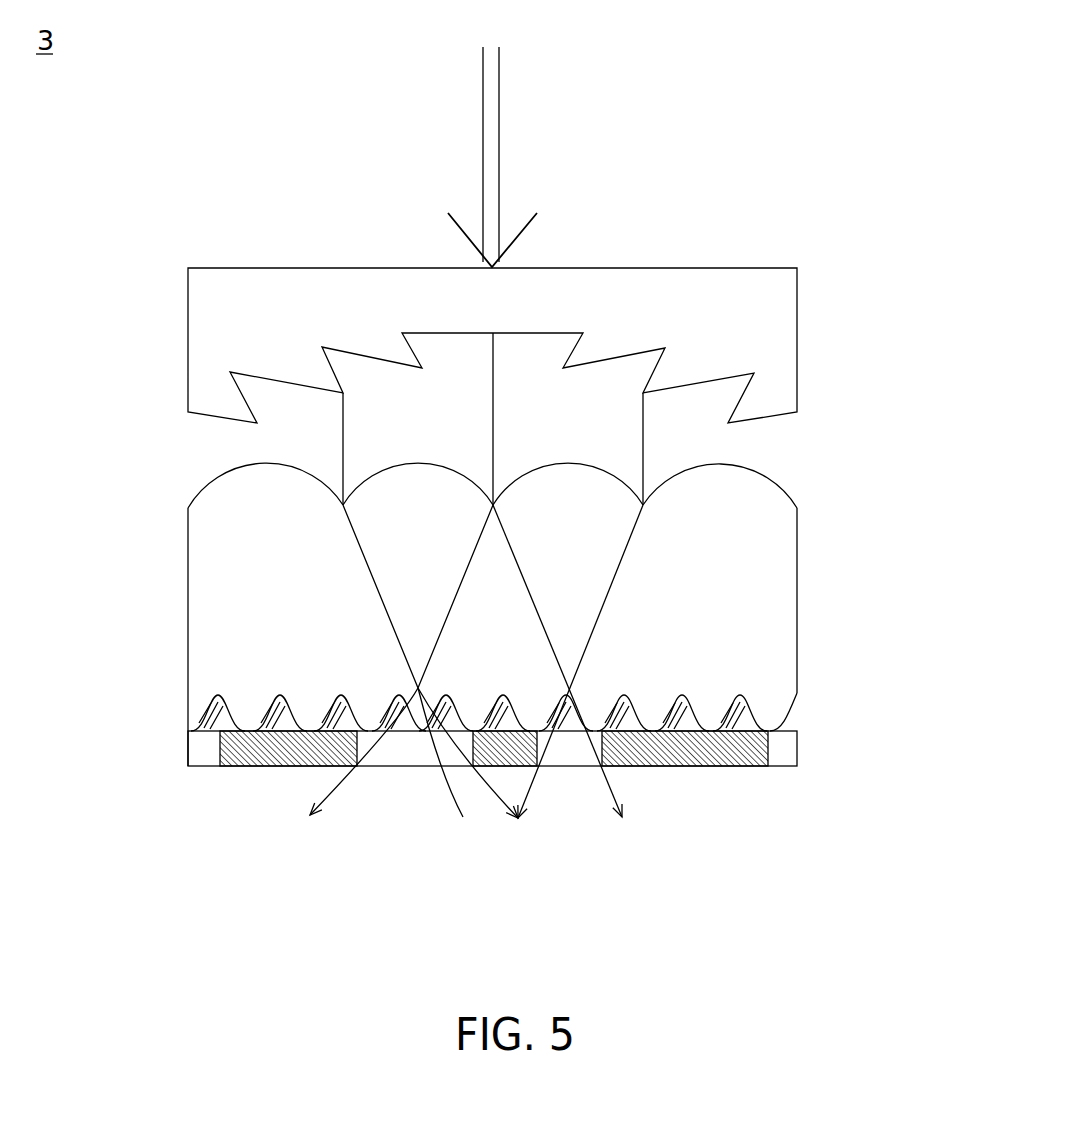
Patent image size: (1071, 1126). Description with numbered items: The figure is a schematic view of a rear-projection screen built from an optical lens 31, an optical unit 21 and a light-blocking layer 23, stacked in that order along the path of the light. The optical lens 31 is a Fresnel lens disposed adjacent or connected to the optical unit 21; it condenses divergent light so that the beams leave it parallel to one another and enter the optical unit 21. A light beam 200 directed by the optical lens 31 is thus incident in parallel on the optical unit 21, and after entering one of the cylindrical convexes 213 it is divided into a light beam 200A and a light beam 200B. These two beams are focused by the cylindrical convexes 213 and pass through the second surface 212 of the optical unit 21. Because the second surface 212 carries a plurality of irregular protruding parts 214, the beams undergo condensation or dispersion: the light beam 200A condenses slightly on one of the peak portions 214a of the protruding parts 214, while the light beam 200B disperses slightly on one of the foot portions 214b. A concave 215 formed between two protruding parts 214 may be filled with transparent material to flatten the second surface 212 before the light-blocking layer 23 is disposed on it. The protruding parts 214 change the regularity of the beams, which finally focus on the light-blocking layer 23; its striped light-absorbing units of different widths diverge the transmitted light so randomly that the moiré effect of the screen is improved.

The light beam 200 is at (493, 100).
The optical lens 31 is at (740, 295).
The light beam 200A is at (630, 447).
The light beam 200B is at (360, 450).
The optical unit 21 is at (782, 580).
The cylindrical convexes 213 is at (262, 463).
The second surface 212 is at (268, 695).
The concave 215 is at (203, 720).
The light-blocking layer 23 is at (798, 747).
The protruding parts 214 is at (569, 690).
The peak portions 214a is at (568, 688).
The foot portions 214b is at (422, 678).